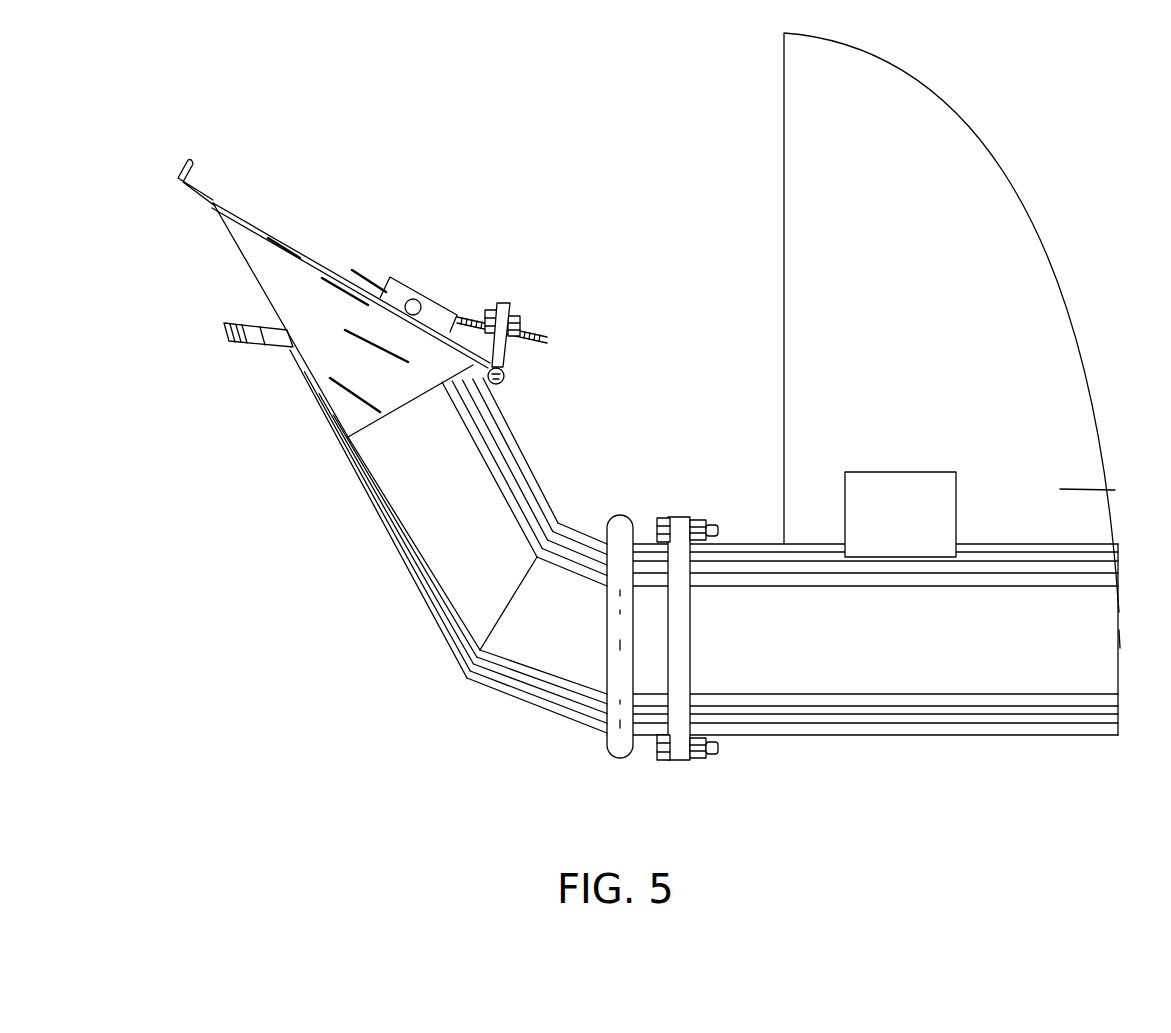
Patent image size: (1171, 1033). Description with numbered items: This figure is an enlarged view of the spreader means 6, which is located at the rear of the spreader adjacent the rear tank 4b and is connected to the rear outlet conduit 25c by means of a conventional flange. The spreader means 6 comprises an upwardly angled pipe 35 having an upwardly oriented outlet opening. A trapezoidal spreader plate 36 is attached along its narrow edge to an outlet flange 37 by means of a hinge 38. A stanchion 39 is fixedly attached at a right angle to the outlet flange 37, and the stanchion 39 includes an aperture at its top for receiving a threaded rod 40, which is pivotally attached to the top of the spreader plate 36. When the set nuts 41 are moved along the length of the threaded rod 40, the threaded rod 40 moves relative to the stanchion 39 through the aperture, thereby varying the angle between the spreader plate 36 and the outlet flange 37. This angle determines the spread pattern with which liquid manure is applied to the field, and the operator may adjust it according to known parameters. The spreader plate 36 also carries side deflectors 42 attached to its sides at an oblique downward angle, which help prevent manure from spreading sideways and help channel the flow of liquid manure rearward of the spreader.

The rear tank 4b is at (818, 270).
The spreader means 6 is at (362, 693).
The rear outlet conduit 25c is at (815, 708).
The upwardly angled pipe 35 is at (463, 537).
The spreader plate 36 is at (195, 197).
The outlet flange 37 is at (225, 325).
The hinge 38 is at (502, 387).
The stanchion 39 is at (507, 352).
The threaded rod 40 is at (470, 315).
The set nuts 41 is at (493, 313).
The side deflectors 42 is at (330, 290).